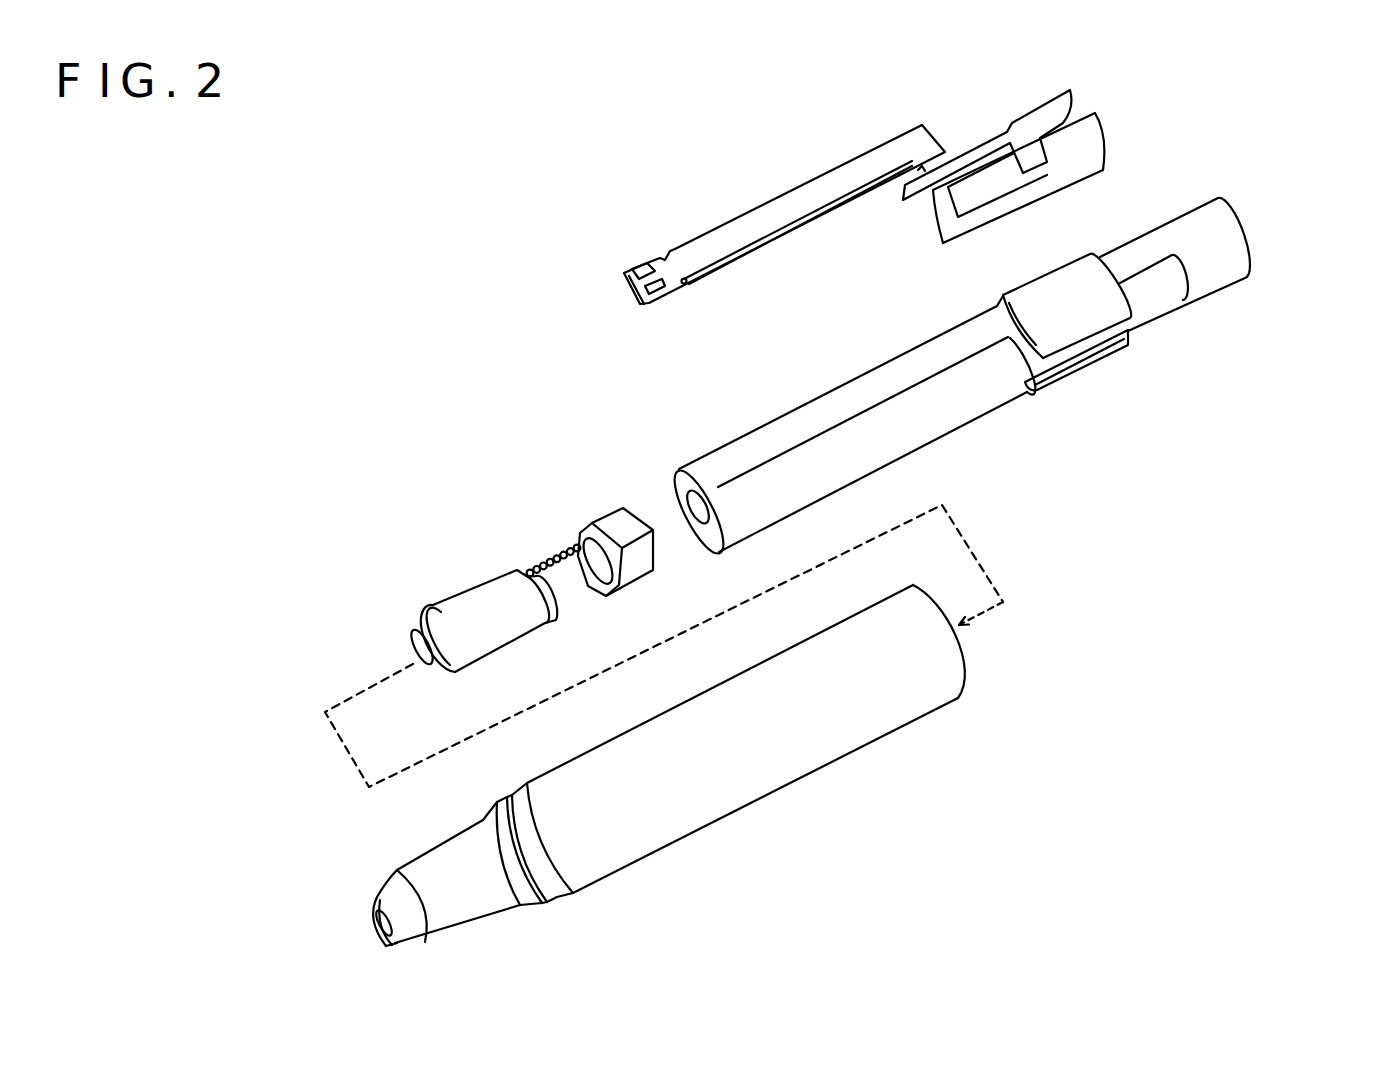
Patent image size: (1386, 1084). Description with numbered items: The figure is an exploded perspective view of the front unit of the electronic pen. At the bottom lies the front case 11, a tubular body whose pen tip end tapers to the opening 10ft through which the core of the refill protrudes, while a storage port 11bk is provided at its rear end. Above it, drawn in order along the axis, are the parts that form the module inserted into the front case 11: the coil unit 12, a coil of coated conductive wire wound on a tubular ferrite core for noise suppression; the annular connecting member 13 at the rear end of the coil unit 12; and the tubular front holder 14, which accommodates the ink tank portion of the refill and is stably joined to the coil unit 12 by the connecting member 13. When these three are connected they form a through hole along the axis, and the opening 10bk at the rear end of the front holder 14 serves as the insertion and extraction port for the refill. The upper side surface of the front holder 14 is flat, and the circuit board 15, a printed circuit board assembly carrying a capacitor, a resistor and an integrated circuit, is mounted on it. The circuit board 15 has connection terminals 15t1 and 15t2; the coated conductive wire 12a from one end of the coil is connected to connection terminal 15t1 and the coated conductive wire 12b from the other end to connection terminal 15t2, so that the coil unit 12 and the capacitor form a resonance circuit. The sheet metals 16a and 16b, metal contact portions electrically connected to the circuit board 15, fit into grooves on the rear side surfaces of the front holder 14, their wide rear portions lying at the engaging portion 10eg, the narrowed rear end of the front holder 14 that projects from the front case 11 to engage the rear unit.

The opening 10bk is at (1257, 230).
The engaging portion 10eg is at (1213, 277).
The opening 10ft is at (360, 933).
The front case 11 is at (777, 793).
The storage port 11bk is at (974, 660).
The coil unit 12 is at (448, 602).
The coated conductive wire 12a is at (545, 558).
The coated conductive wire 12b is at (556, 559).
The connecting member 13 is at (610, 512).
The front holder 14 is at (995, 407).
The circuit board 15 is at (827, 174).
The connection terminal 15t1 is at (641, 270).
The connection terminal 15t2 is at (661, 293).
The sheet metal (contact portion) 16a is at (1048, 96).
The sheet metal (contact portion) 16b is at (1100, 142).